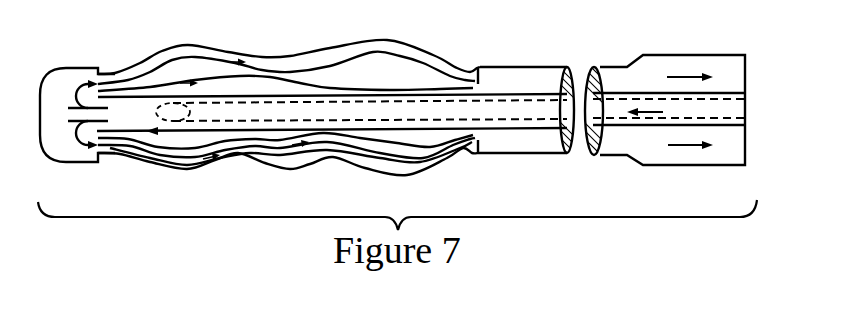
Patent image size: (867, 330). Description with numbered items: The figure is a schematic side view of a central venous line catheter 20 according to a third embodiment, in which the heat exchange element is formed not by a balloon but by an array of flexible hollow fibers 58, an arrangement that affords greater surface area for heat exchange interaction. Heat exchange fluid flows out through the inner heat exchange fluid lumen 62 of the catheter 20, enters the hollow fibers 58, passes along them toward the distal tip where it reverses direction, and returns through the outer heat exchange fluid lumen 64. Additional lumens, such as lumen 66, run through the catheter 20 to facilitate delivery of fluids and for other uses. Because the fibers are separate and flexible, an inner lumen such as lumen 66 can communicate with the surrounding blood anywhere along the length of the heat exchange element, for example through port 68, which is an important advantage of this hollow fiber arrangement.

The catheter 20 is at (499, 166).
The hollow fibers 58 is at (163, 77).
The inner heat exchange fluid lumen 62 is at (527, 96).
The outer heat exchange fluid lumen 64 is at (486, 80).
The lumen 66 is at (267, 122).
The port 68 is at (147, 143).